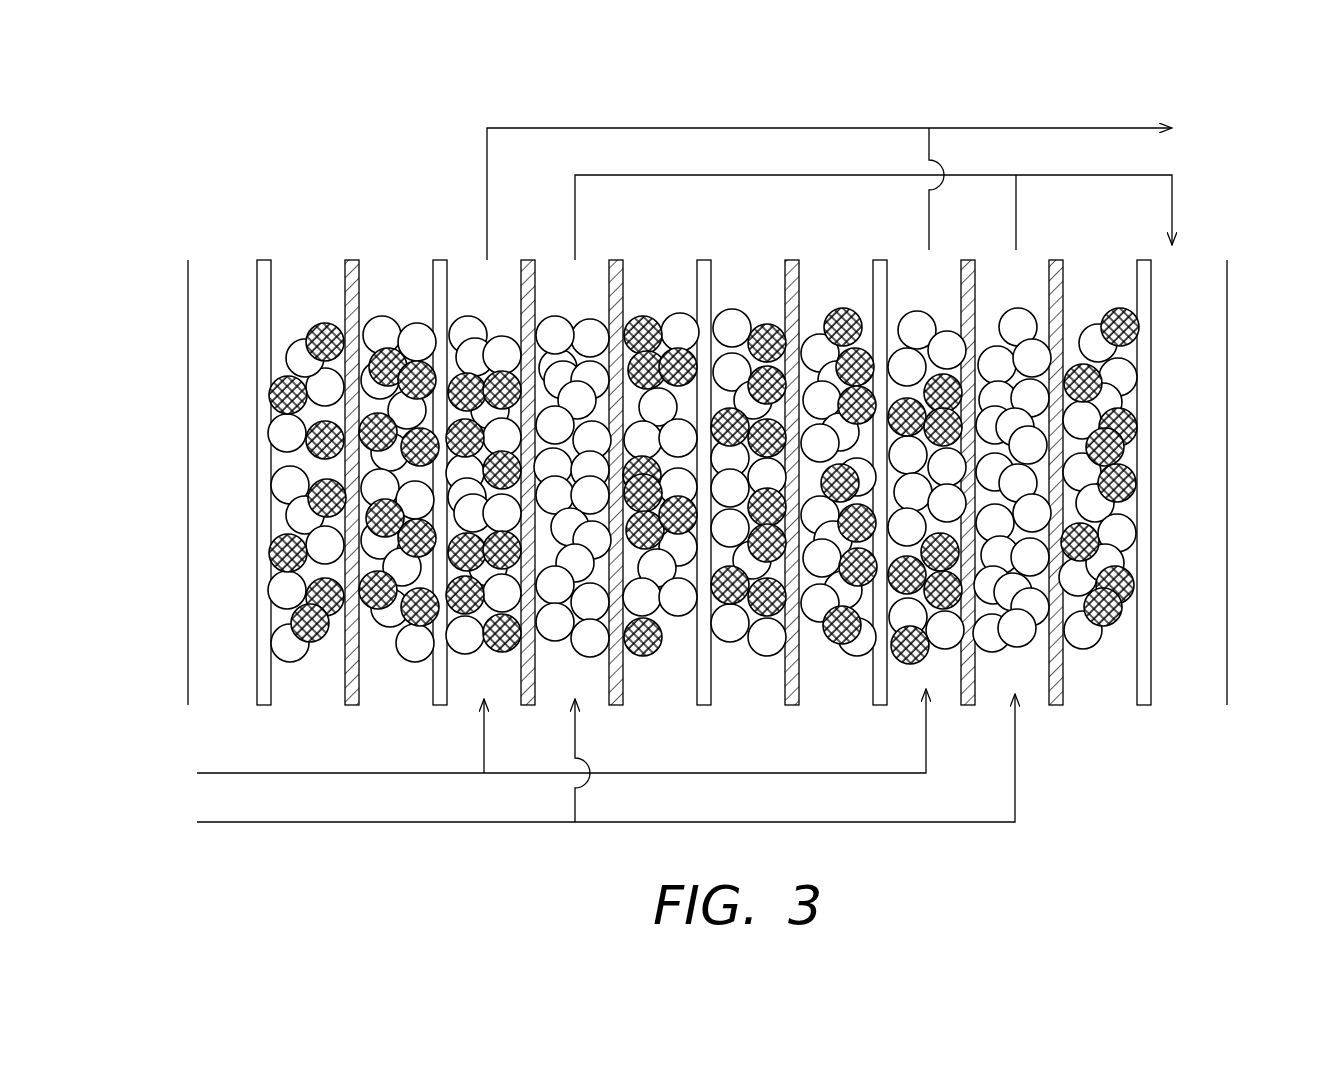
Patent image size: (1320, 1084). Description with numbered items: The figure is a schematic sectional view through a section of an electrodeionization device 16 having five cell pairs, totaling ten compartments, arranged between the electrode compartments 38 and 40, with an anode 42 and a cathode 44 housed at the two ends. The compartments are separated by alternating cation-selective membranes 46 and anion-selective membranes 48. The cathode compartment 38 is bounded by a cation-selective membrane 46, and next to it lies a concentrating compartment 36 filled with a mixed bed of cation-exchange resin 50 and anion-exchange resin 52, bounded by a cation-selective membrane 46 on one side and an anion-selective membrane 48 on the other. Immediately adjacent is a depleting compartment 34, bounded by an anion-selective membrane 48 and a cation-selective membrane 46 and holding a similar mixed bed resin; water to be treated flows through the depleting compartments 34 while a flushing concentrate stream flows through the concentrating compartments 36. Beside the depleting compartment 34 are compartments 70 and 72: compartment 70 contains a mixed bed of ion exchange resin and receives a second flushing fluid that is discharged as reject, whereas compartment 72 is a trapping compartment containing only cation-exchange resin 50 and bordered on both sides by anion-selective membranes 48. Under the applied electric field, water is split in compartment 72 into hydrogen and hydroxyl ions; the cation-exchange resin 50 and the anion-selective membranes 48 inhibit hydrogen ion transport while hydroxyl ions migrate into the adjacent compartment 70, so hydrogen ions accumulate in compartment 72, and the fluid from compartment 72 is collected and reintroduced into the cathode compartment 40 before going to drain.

The electrodeionization device 16 is at (268, 118).
The depleting compartment 34 is at (398, 257).
The concentrating compartment 36 is at (307, 257).
The cathode compartment 38 is at (203, 409).
The cathode compartment 40 is at (1173, 407).
The anode 42 is at (188, 585).
The cathode 44 is at (1227, 590).
The cation-selective membrane 46 is at (265, 705).
The anion-selective membrane 48 is at (353, 705).
The cation-exchange resin 50 is at (292, 346).
The anion-exchange resin 52 is at (322, 325).
The compartment 70 is at (482, 257).
The trapping compartment 72 is at (565, 257).